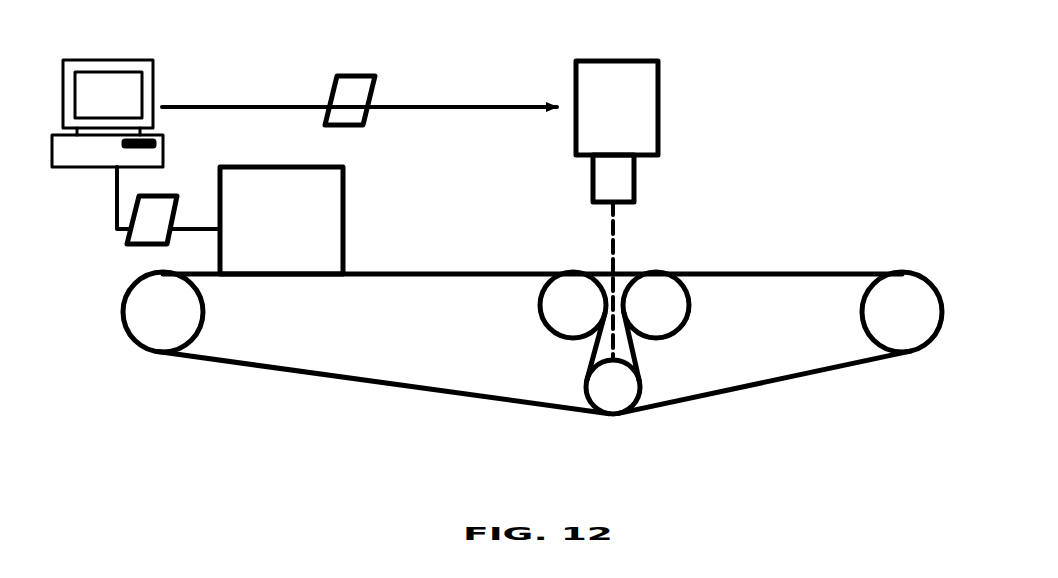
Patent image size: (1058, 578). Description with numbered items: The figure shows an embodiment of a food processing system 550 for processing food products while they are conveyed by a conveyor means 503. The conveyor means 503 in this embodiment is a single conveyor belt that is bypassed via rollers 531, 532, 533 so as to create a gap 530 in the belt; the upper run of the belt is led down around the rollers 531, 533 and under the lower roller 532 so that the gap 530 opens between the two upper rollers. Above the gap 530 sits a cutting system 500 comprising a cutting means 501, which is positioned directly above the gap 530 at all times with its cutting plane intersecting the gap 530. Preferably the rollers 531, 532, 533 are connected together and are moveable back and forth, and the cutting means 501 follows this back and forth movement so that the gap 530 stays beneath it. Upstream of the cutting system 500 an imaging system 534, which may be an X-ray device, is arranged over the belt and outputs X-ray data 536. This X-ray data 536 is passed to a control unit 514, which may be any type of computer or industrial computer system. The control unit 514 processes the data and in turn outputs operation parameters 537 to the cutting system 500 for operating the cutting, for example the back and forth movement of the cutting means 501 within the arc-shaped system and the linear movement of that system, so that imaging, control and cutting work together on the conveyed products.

The control unit 514 is at (147, 87).
The operation parameters 537 is at (347, 75).
The X-ray data 536 is at (172, 197).
The imaging system 534 is at (337, 208).
The cutting system 500 is at (657, 108).
The cutting means 501 is at (633, 175).
The gap 530 is at (627, 268).
The conveyor means 503 is at (722, 272).
The roller 533 is at (548, 327).
The roller 531 is at (665, 302).
The roller 532 is at (612, 385).
The food processing system 550 is at (850, 81).